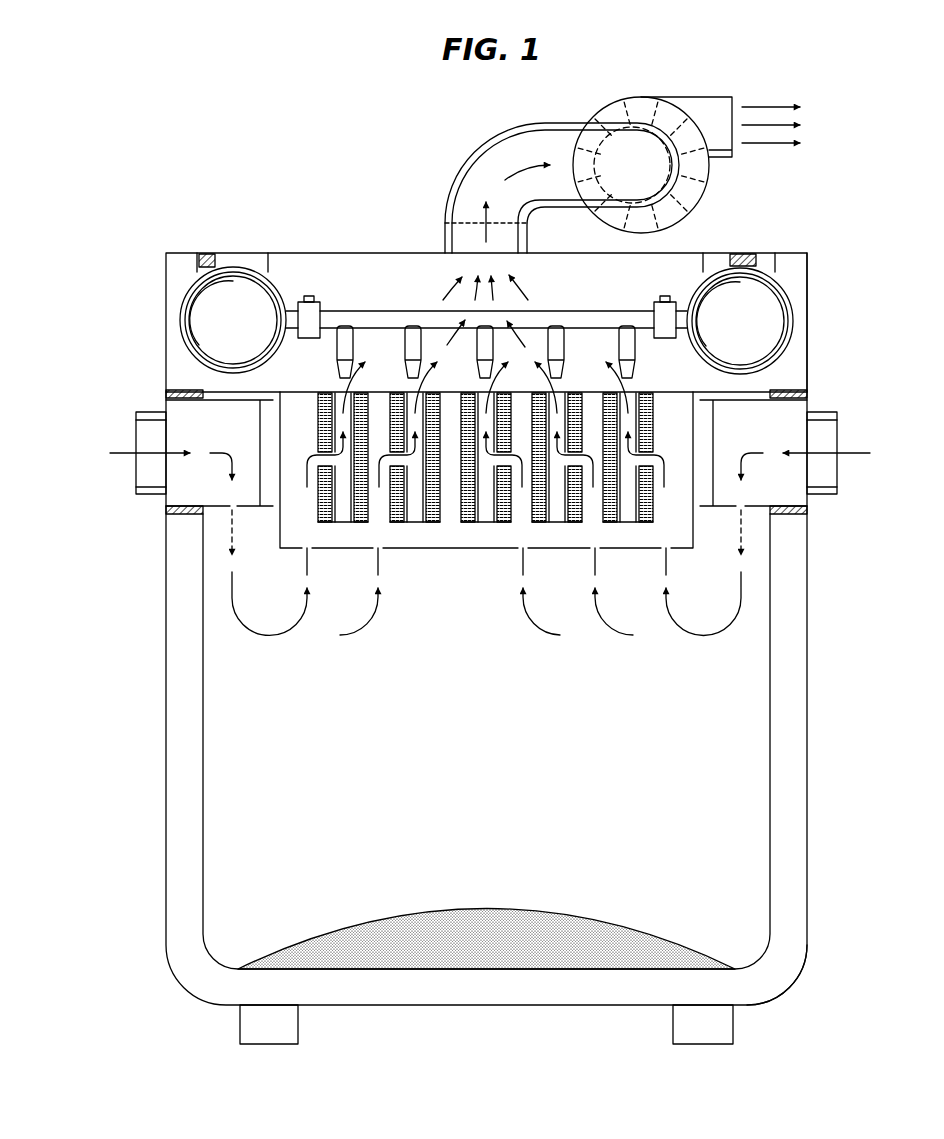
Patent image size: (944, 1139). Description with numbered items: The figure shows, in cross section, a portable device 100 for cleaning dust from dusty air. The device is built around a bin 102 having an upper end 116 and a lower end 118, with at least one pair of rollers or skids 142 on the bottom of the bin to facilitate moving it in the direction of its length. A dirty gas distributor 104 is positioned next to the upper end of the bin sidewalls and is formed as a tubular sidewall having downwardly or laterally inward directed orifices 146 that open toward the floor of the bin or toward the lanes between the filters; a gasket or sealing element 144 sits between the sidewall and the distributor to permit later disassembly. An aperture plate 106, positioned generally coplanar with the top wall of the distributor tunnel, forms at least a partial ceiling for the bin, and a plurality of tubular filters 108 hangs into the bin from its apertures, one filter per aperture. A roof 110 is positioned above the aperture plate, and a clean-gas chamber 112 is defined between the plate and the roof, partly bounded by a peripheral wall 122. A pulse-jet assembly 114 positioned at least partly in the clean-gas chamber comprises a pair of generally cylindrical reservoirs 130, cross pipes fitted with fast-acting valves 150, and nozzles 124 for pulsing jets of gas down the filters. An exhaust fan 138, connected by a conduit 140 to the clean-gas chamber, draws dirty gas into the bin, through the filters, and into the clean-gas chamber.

The portable device 100 is at (218, 208).
The bin 102 is at (166, 727).
The dirty gas distributor 104 is at (784, 433).
The aperture plate 106 is at (293, 393).
The tubular filters 108 is at (465, 566).
The roof 110 is at (388, 253).
The clean-gas chamber 112 is at (431, 291).
The pulse-jet assembly 114 is at (298, 288).
The upper end 116 is at (808, 523).
The lower end 118 is at (808, 971).
The peripheral wall 122 is at (808, 300).
The nozzles 124 is at (617, 346).
The cylindrical reservoirs 130 is at (252, 331).
The exhaust fan 138 is at (690, 97).
The conduit 140 is at (498, 134).
The rollers or skids 142 is at (240, 1032).
The gasket or sealing element 144 is at (175, 514).
The orifices 146 is at (745, 512).
The fast-acting valves 150 is at (313, 302).